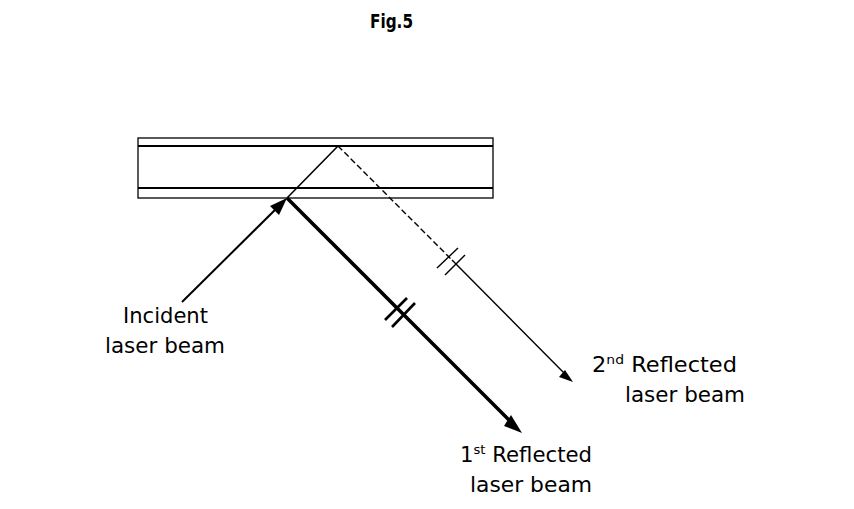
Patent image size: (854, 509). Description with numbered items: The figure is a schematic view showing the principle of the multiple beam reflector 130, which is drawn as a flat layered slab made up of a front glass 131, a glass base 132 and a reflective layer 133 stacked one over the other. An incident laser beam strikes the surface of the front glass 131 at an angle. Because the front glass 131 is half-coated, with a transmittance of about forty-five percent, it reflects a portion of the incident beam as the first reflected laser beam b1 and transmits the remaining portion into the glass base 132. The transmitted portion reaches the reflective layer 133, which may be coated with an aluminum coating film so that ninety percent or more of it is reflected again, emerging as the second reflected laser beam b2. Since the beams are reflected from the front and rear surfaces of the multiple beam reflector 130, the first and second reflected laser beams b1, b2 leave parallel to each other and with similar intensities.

The multiple beam reflector 130 is at (157, 117).
The front glass 131 is at (137, 188).
The glass base 132 is at (143, 170).
The reflective layer 133 is at (137, 146).
The first reflected laser beam b1 is at (442, 358).
The second reflected laser beam b2 is at (497, 307).